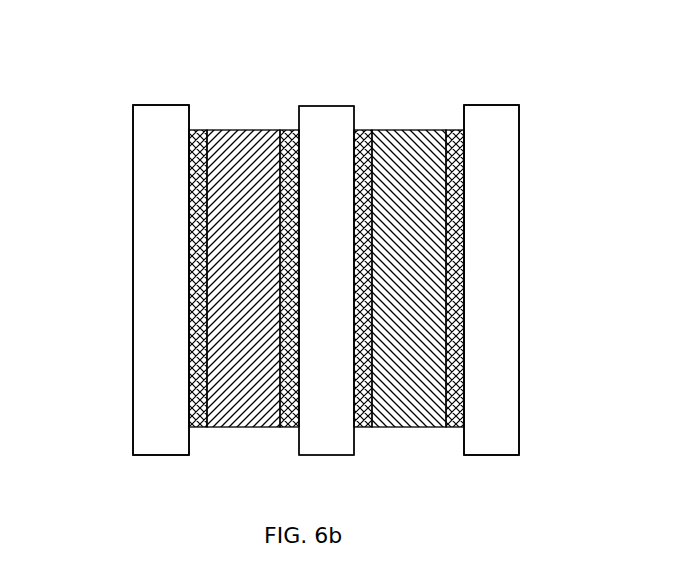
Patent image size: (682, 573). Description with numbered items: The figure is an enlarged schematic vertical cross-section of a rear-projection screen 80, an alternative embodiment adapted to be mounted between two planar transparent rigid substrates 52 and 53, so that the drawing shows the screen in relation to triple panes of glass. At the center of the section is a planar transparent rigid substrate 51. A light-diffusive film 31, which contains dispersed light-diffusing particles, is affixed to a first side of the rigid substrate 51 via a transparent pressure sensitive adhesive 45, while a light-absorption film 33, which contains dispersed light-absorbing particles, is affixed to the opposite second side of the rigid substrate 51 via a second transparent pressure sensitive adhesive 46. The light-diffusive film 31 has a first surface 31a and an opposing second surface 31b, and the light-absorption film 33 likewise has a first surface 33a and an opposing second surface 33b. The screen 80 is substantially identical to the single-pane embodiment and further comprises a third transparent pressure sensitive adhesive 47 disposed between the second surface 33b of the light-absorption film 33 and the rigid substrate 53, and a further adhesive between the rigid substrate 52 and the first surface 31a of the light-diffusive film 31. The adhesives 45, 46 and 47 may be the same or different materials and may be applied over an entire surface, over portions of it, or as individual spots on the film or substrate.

The rear-projection screen 80 is at (298, 93).
The light-diffusive film 31 is at (175, 197).
The first surface of light-diffusive film 31a is at (188, 162).
The second surface of light-diffusive film 31b is at (188, 234).
The light-absorption film 33 is at (465, 197).
The first surface of light-absorption film 33a is at (465, 160).
The second surface of light-absorption film 33b is at (465, 233).
The transparent pressure sensitive adhesive 45 is at (188, 282).
The second transparent pressure sensitive adhesive 46 is at (188, 348).
The third transparent pressure sensitive adhesive 47 is at (465, 345).
The rigid substrate 51 is at (318, 320).
The rigid substrate 52 is at (150, 402).
The rigid substrate 53 is at (503, 399).